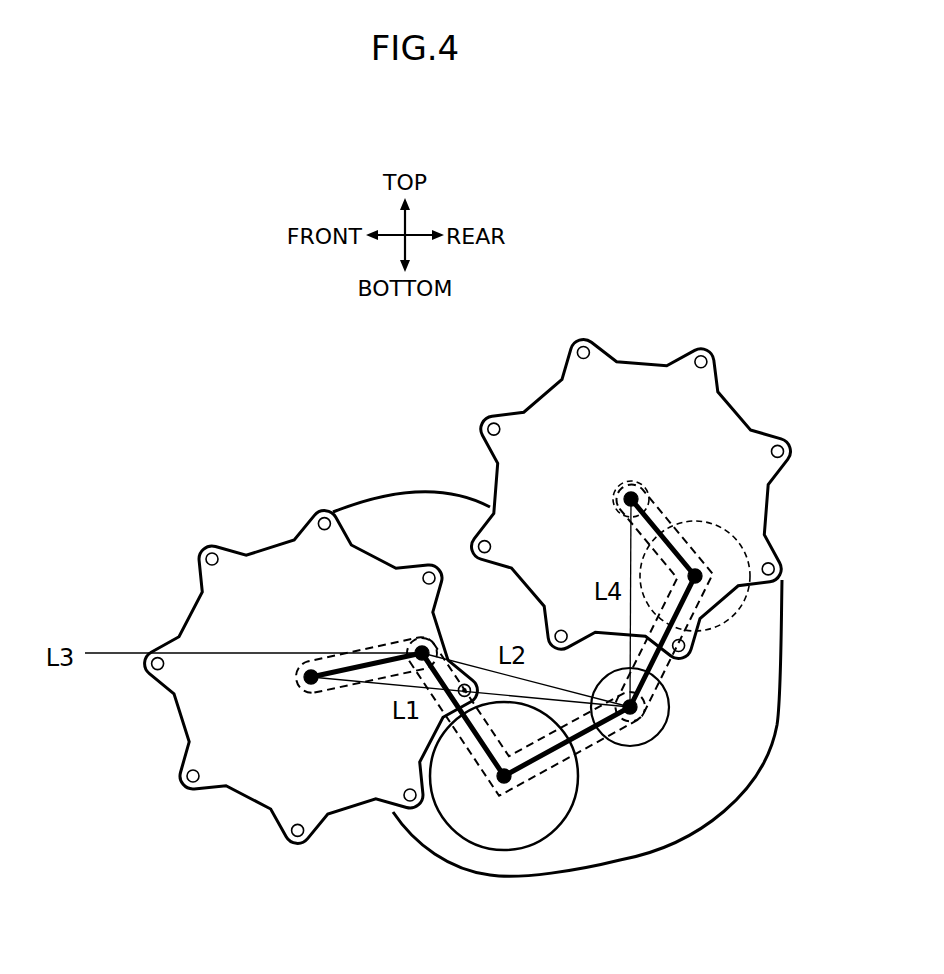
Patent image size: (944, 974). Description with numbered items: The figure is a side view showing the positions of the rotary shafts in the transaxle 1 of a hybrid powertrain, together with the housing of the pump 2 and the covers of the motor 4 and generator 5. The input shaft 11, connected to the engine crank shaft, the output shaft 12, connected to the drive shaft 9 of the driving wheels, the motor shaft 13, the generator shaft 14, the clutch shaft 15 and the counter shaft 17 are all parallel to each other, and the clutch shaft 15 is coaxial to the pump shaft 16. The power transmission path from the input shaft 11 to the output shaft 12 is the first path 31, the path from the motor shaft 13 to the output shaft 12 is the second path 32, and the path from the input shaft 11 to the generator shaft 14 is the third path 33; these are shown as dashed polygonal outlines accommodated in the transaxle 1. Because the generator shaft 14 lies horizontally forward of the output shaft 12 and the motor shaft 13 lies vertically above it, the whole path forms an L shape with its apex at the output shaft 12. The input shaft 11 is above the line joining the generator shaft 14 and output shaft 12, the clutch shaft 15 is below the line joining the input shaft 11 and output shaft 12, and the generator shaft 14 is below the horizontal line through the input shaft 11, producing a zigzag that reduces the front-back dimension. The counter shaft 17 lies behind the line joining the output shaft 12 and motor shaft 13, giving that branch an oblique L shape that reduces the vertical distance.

The transaxle 1 is at (284, 399).
The pump 2 is at (455, 838).
The motor 4 is at (743, 410).
The generator 5 is at (185, 617).
The drive shaft 9 is at (669, 707).
The input shaft 11 is at (420, 648).
The output shaft 12 is at (640, 733).
The motor shaft 13 is at (628, 493).
The generator shaft 14 is at (303, 683).
The clutch shaft 15 is at (504, 817).
The pump shaft 16 is at (500, 782).
The counter shaft 17 is at (698, 581).
The first path 31 is at (597, 743).
The second path 32 is at (650, 497).
The third path 33 is at (336, 690).